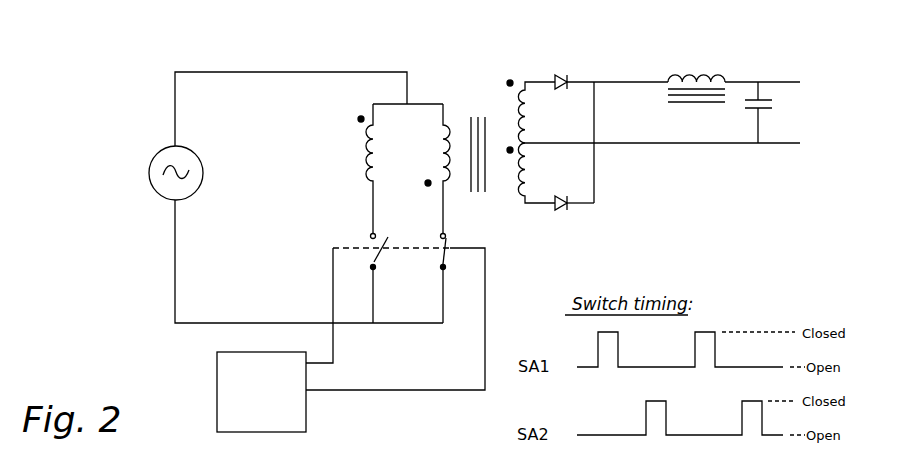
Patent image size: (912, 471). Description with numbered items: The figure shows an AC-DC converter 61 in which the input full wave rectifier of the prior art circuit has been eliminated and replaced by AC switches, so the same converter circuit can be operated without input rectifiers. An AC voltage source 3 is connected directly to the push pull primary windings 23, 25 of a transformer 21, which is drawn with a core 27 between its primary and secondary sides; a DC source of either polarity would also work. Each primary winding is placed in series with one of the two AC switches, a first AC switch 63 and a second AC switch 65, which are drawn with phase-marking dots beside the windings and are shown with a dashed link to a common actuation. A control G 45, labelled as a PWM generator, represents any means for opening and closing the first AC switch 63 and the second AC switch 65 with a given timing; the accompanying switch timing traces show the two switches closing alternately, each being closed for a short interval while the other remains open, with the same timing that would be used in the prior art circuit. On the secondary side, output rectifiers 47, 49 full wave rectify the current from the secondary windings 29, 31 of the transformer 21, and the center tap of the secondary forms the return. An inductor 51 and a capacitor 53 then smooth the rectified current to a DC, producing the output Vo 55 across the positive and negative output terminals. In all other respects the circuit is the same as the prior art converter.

The AC voltage source 3 is at (147, 167).
The transformer 21 is at (452, 80).
The primary winding 23 is at (362, 152).
The primary winding 25 is at (424, 162).
The transformer core 27 is at (462, 117).
The secondary winding 29 is at (516, 103).
The secondary winding 31 is at (516, 180).
The control G 45 is at (216, 375).
The output rectifier 47 is at (557, 210).
The output rectifier 49 is at (555, 78).
The inductor 51 is at (676, 72).
The capacitor 53 is at (745, 118).
The output Vo 55 is at (838, 95).
The AC-DC converter 61 is at (153, 72).
The AC switch SA1 63 is at (388, 258).
The AC switch SA2 65 is at (443, 253).